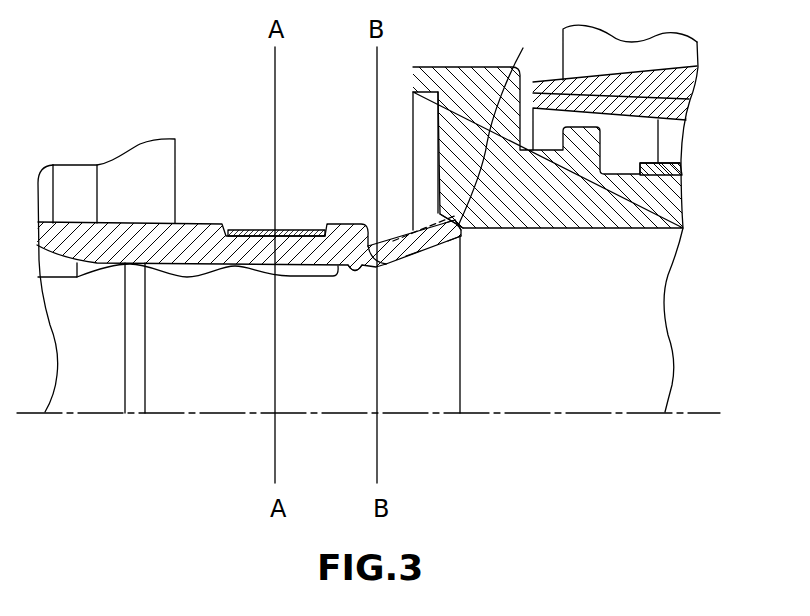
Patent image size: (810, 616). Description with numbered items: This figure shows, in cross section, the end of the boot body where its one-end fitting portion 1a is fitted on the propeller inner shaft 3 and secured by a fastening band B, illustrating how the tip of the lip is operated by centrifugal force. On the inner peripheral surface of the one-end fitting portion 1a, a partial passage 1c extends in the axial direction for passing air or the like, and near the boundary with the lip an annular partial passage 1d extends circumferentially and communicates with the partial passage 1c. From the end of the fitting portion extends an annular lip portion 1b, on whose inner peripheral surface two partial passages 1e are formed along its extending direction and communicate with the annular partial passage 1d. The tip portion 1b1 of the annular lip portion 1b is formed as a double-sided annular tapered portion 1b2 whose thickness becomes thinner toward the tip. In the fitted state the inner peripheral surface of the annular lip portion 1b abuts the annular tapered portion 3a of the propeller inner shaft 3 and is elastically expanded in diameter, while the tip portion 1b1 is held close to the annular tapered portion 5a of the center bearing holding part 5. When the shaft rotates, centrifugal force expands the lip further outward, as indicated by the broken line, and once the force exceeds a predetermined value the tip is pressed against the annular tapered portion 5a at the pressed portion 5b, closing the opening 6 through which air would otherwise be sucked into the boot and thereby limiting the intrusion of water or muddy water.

The one-end fitting portion 1a is at (312, 250).
The annular lip portion 1b is at (407, 243).
The tip portion 1b1 is at (449, 242).
The annular tapered portion 1b2 is at (457, 242).
The partial passage 1c is at (250, 272).
The annular partial passage 1d is at (352, 266).
The partial passages 1e is at (390, 268).
The propeller inner shaft 3 is at (326, 360).
The annular tapered portion 3a is at (414, 252).
The center bearing holding part 5 is at (480, 137).
The annular tapered portion 5a is at (466, 222).
The pressed portion 5b is at (441, 205).
The opening 6 is at (498, 125).
The fastening band B is at (258, 229).